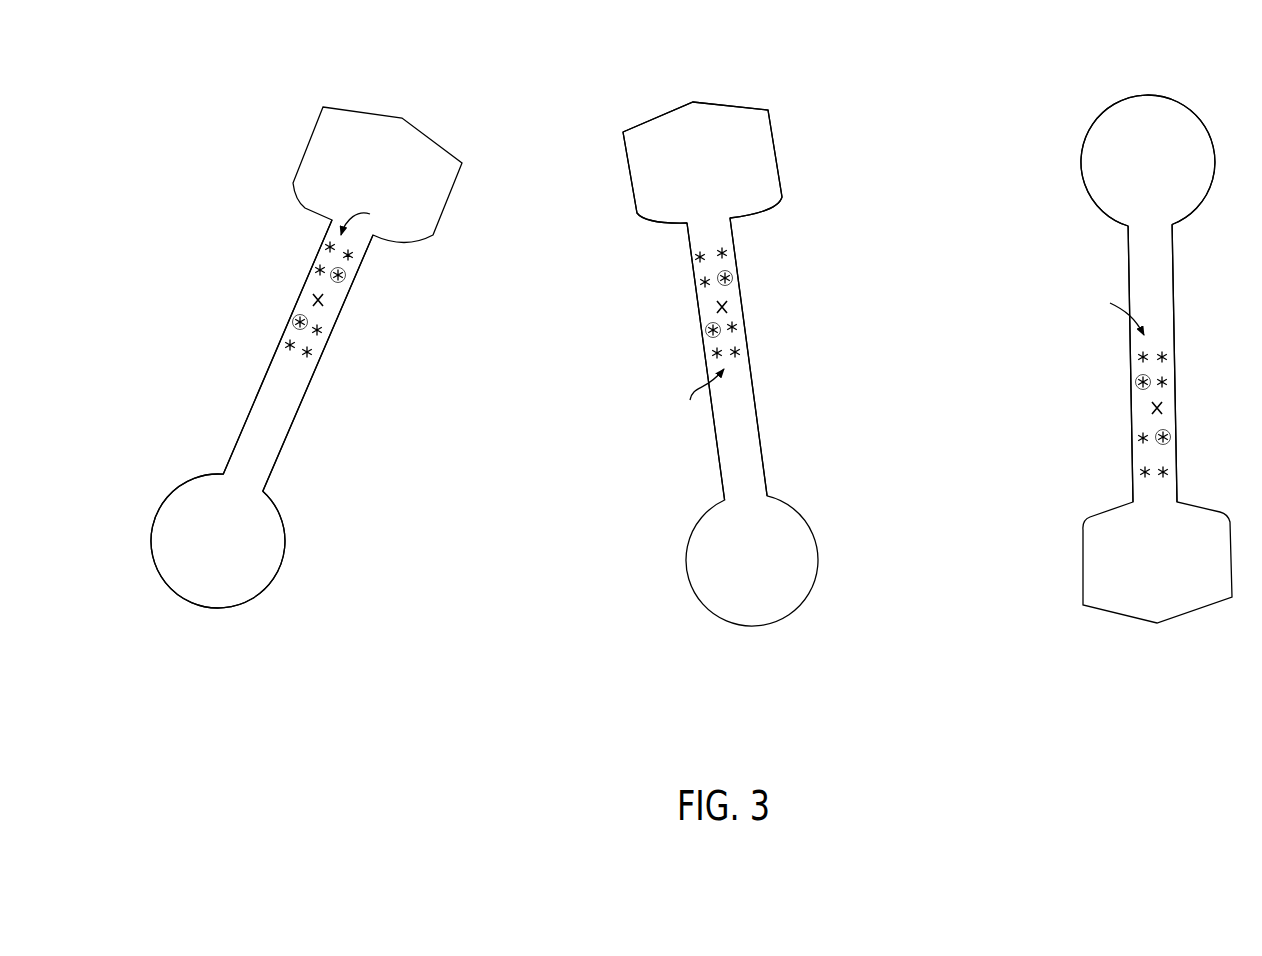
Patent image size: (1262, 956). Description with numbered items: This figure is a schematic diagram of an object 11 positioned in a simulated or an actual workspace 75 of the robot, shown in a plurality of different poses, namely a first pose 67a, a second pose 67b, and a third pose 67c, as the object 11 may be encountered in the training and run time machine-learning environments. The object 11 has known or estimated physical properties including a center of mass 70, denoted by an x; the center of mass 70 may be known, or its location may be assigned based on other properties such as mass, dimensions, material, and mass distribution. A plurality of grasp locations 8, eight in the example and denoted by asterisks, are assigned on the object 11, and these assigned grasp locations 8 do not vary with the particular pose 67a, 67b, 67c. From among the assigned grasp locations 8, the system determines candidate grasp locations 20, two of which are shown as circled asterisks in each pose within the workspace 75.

The first pose 67a is at (398, 76).
The second pose 67b is at (723, 81).
The third pose 67c is at (1183, 79).
The object 11 is at (282, 566).
The workspace 75 is at (362, 431).
The candidate grasp locations 20 is at (297, 314).
The center of mass 70 is at (329, 307).
The grasp locations 8 is at (742, 312).